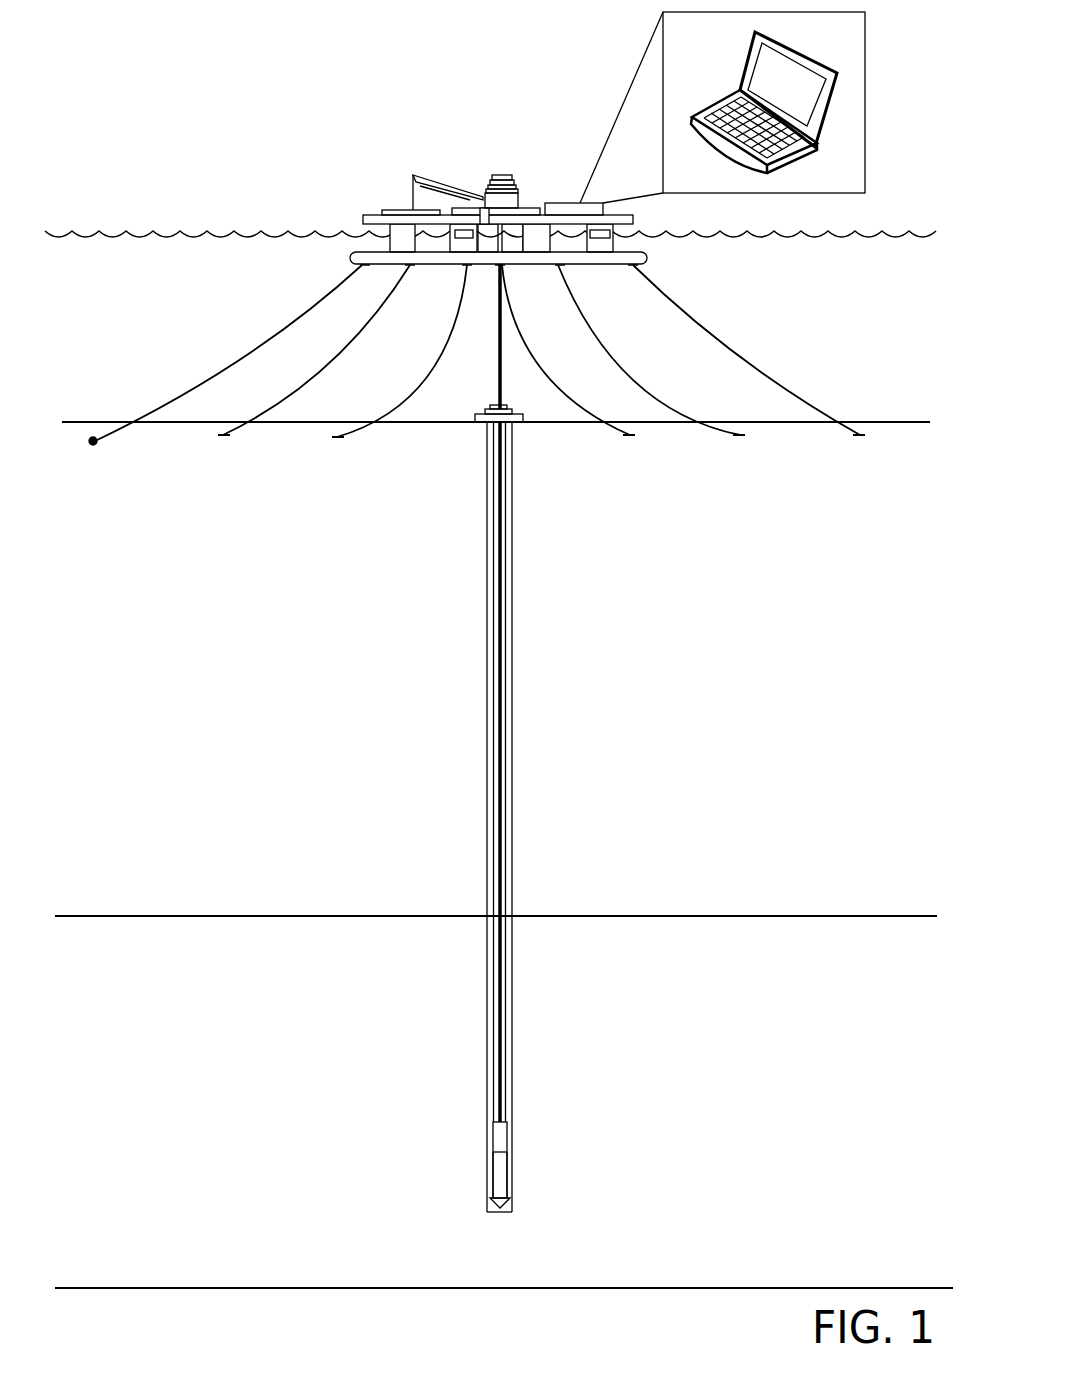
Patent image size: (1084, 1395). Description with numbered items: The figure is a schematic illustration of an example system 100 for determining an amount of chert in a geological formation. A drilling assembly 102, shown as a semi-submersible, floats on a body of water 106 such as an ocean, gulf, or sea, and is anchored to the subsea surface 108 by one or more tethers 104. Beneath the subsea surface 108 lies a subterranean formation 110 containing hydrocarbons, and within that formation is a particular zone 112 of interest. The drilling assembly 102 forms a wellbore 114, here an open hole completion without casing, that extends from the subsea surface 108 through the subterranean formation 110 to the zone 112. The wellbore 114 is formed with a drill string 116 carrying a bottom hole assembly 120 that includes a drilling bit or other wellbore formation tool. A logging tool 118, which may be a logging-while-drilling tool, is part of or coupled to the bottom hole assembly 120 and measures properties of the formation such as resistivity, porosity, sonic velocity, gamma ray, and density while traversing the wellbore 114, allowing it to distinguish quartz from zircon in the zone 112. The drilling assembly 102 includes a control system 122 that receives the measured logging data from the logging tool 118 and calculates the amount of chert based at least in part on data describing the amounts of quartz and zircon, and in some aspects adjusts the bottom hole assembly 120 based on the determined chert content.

The system 100 is at (240, 91).
The drilling assembly 102 is at (538, 168).
The tethers 104 is at (703, 334).
The body of water 106 is at (878, 230).
The subsea surface 108 is at (848, 421).
The subterranean formation 110 is at (823, 586).
The zone 112 is at (852, 1076).
The wellbore 114 is at (512, 590).
The drill string 116 is at (502, 490).
The logging tool 118 is at (507, 1135).
The bottom hole assembly 120 is at (507, 1177).
The control system 122 is at (818, 62).